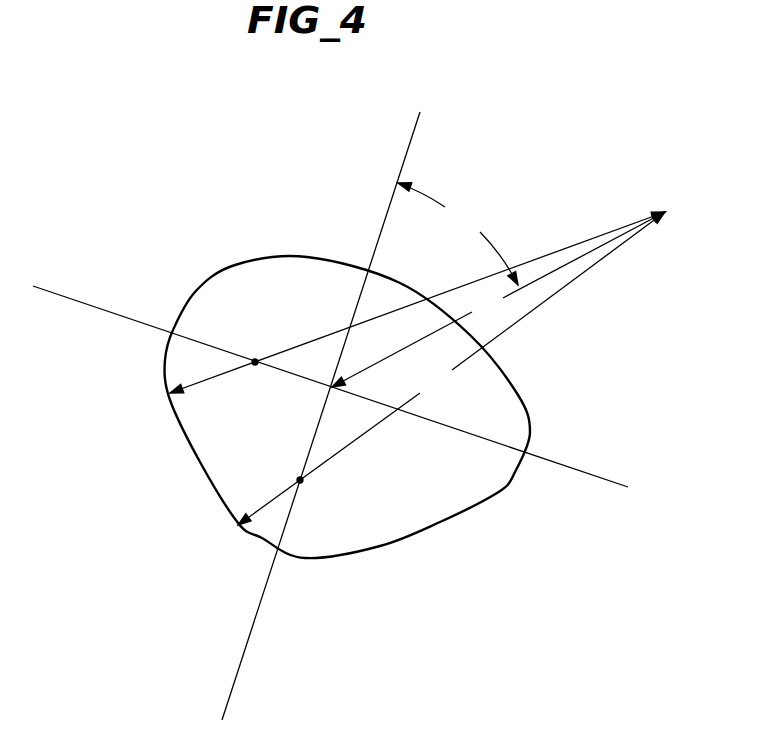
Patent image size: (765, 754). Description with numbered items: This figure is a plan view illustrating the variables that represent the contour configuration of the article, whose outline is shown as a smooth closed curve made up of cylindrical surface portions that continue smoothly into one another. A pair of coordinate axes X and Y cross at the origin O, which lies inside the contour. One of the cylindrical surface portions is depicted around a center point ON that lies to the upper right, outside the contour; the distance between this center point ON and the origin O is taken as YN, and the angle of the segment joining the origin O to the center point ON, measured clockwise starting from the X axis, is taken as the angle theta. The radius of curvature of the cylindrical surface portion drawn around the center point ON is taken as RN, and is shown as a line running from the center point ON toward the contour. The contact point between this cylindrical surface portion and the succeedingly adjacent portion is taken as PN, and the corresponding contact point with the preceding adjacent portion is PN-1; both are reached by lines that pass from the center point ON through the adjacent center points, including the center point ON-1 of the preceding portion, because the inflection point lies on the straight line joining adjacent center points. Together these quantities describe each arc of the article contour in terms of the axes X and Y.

The X-axis X is at (326, 403).
The Y-axis Y is at (340, 394).
The origin of the coordinate axes O is at (329, 374).
The center point ON is at (674, 212).
The center point of the preceding adjacent cylindrical surface portion ON-1 is at (321, 488).
The contact point PN is at (403, 312).
The preceding contact point PN-1 is at (221, 536).
The radius of curvature RN is at (451, 368).
The distance between center point and origin YN is at (498, 299).